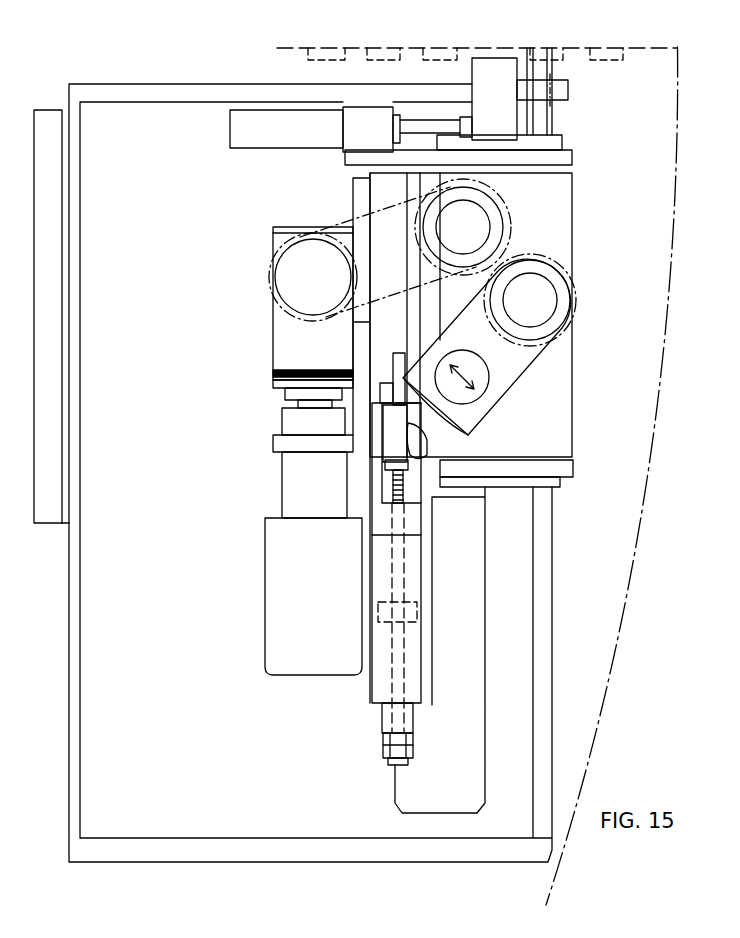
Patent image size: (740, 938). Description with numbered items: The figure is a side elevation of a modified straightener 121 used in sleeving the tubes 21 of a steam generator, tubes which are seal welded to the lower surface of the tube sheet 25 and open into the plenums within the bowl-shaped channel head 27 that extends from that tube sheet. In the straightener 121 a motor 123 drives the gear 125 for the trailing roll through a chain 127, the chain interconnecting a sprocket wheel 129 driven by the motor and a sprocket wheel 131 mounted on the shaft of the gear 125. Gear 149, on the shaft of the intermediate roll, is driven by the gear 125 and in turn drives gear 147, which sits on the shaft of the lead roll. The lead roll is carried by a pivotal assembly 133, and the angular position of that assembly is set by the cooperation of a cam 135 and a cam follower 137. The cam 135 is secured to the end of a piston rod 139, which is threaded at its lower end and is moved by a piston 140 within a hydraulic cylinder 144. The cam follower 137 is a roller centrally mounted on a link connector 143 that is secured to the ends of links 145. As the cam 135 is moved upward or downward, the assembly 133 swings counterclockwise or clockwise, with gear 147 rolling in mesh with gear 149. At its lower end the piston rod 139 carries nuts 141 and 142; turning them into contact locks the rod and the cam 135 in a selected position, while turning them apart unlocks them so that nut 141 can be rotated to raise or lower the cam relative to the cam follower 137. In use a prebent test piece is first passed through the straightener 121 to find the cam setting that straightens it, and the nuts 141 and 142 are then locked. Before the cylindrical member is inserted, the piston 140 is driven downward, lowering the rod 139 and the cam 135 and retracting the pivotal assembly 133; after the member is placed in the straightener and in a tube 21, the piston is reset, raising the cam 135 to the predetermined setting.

The tubes 21 is at (440, 50).
The tube sheet 25 is at (287, 48).
The channel head 27 is at (626, 600).
The straightener 121 is at (611, 538).
The motor 123 is at (290, 665).
The gear 125 is at (497, 210).
The chain 127 is at (352, 193).
The sprocket wheel 129 is at (293, 322).
The sprocket wheel 131 is at (507, 237).
The pivotal assembly 133 is at (525, 368).
The cam 135 is at (392, 448).
The cam follower 137 is at (427, 500).
The piston rod 139 is at (393, 493).
The piston 140 is at (410, 612).
The nut 141 is at (386, 755).
The nut 142 is at (385, 740).
The link connector 143 is at (475, 435).
The hydraulic cylinder 144 is at (412, 680).
The links 145 is at (478, 322).
The gear 147 is at (493, 418).
The gear 149 is at (578, 300).